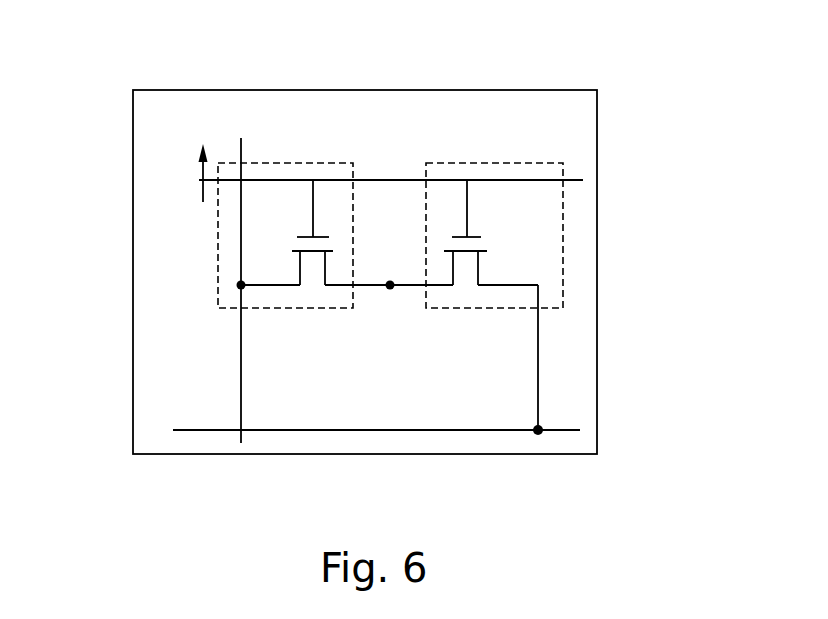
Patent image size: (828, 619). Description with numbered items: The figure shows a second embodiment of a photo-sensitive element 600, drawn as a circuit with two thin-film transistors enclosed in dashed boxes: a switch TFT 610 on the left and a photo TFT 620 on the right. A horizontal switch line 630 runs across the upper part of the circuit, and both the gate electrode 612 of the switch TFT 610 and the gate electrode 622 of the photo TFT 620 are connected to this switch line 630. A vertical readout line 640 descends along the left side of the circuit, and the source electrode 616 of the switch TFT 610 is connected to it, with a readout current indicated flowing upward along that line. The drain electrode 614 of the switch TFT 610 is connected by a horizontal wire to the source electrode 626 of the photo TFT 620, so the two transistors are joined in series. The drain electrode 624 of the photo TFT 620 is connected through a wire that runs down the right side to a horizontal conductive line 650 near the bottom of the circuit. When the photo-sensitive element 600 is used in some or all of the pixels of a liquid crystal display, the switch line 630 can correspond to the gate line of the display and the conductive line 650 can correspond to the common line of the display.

The photo-sensitive element 600 is at (388, 120).
The switch TFT 610 is at (235, 174).
The gate electrode of switch TFT 612 is at (312, 196).
The drain electrode of switch TFT 614 is at (327, 268).
The source electrode of switch TFT 616 is at (292, 268).
The photo TFT 620 is at (550, 174).
The gate electrode of photo TFT 622 is at (468, 198).
The drain electrode of photo TFT 624 is at (487, 268).
The source electrode of photo TFT 626 is at (443, 268).
The switch line 630 is at (573, 180).
The readout line 640 is at (240, 380).
The conductive line 650 is at (566, 431).